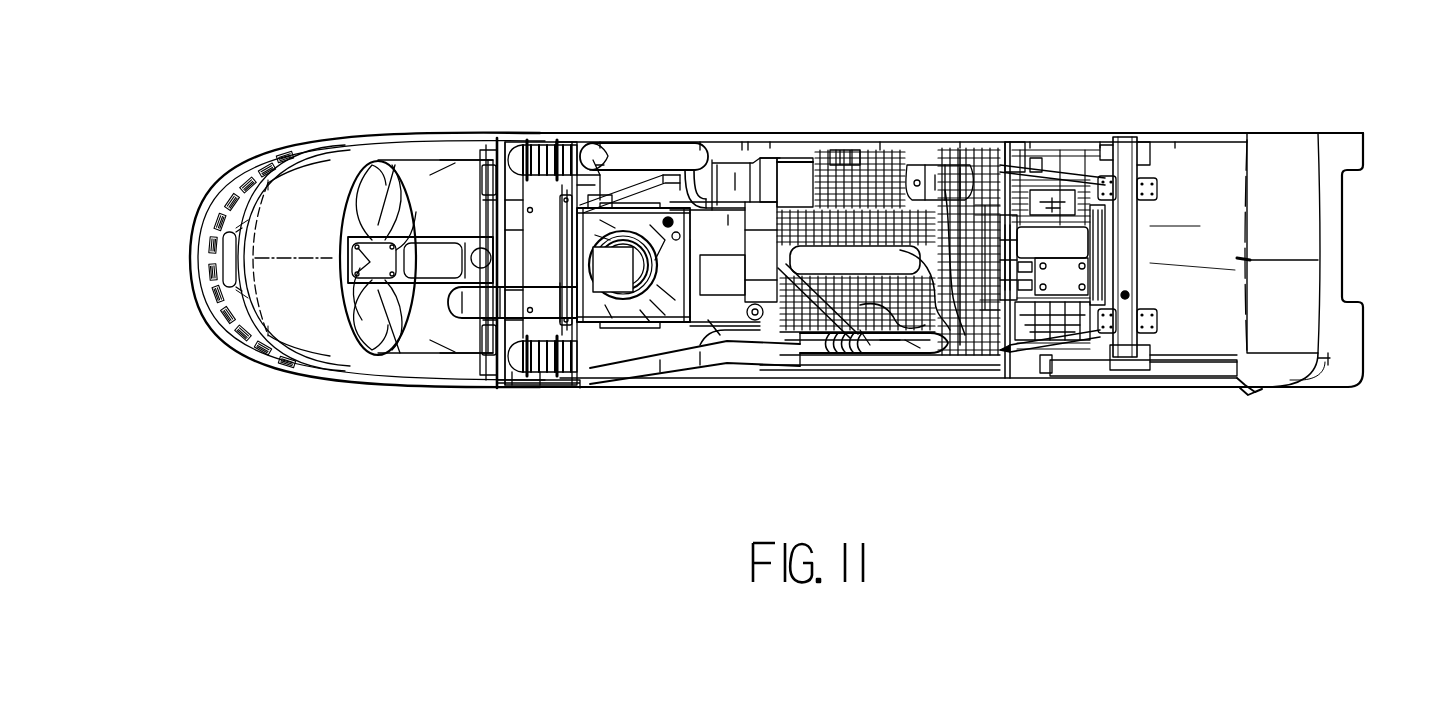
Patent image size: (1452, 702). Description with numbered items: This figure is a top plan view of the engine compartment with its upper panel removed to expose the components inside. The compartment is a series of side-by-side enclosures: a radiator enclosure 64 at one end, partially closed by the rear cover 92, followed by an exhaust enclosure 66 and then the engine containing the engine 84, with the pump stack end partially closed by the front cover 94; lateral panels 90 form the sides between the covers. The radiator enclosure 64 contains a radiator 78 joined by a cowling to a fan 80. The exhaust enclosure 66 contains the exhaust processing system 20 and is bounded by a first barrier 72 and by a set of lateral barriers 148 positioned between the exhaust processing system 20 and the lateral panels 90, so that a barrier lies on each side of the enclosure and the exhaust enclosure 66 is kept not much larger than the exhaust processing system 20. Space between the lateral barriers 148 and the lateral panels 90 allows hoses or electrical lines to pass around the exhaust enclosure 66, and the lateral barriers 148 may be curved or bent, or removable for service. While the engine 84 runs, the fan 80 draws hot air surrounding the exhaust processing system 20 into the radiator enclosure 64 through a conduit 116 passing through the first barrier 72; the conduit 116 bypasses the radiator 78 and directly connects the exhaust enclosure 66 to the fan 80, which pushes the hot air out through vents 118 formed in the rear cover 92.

The exhaust processing system 20 is at (613, 317).
The radiator enclosure 64 is at (460, 356).
The exhaust enclosure 66 is at (595, 175).
The first barrier 72 is at (573, 230).
The radiator 78 is at (500, 390).
The fan 80 is at (378, 205).
The engine 84 is at (912, 173).
The lateral panels 90 is at (685, 135).
The rear cover 92 is at (215, 322).
The front cover 94 is at (1347, 218).
The conduit 116 is at (520, 302).
The vents 118 is at (237, 173).
The lateral barriers 148 is at (623, 203).